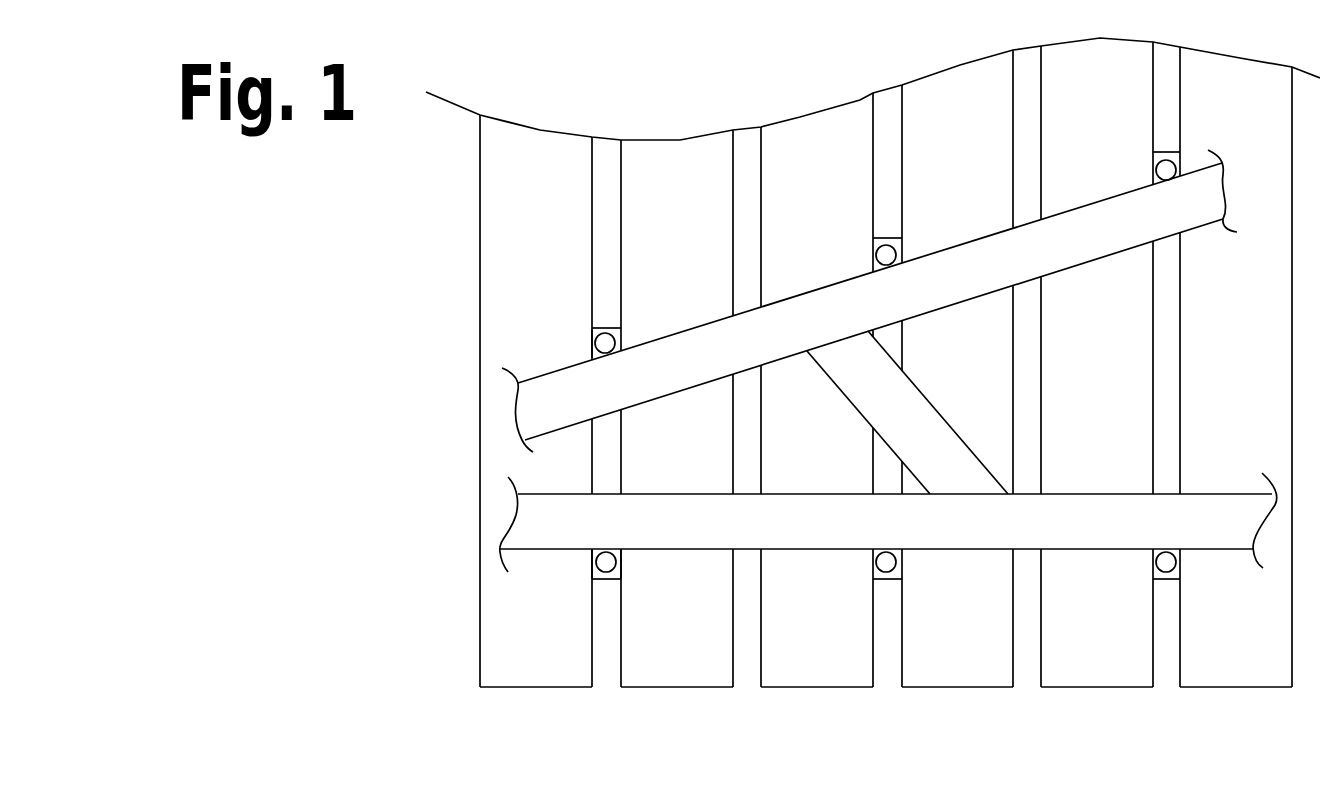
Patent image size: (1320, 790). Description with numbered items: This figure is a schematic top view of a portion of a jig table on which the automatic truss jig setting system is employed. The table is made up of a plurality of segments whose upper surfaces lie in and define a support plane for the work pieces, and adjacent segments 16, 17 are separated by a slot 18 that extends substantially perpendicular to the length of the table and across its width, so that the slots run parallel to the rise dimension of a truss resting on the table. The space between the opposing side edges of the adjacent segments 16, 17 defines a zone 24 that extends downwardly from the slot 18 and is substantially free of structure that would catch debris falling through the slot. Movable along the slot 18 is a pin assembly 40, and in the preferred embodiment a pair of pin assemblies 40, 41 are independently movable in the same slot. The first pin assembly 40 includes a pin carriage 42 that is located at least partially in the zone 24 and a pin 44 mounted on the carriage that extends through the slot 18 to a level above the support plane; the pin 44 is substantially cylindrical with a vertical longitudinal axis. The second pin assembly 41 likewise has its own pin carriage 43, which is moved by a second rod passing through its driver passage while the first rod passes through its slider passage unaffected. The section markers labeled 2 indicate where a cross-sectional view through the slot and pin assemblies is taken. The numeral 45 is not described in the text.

The section line 2- 2 is at (573, 525).
The segment 16 is at (575, 670).
The adjacent segment 17 is at (658, 667).
The slot 18 is at (605, 207).
The zone 24 is at (606, 653).
The pin assembly 40 is at (575, 345).
The second pin assembly 41 is at (578, 582).
The pin carriage 42 is at (608, 326).
The pin carriage of the second pin assembly 43 is at (606, 563).
The pin 44 is at (593, 338).
The lower clip plate 45 is at (595, 578).